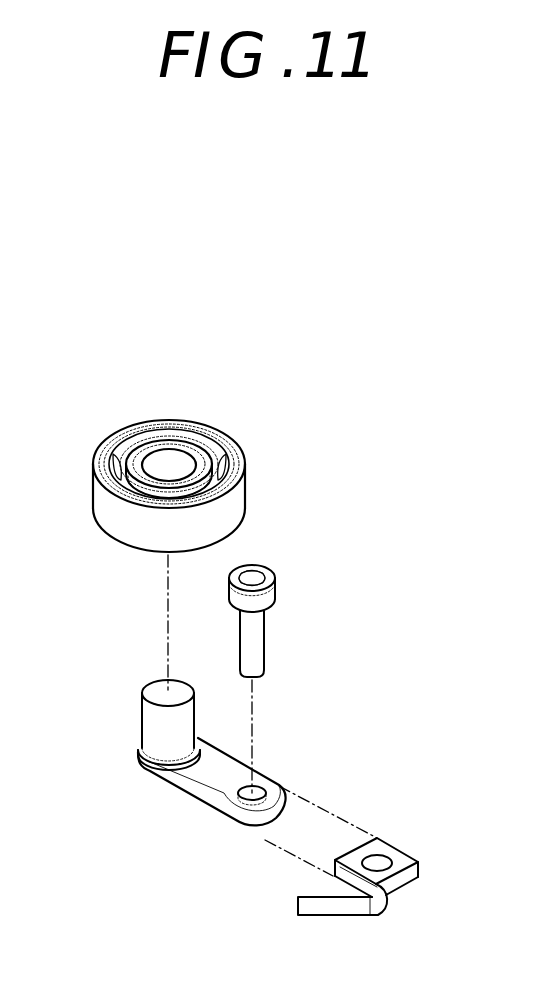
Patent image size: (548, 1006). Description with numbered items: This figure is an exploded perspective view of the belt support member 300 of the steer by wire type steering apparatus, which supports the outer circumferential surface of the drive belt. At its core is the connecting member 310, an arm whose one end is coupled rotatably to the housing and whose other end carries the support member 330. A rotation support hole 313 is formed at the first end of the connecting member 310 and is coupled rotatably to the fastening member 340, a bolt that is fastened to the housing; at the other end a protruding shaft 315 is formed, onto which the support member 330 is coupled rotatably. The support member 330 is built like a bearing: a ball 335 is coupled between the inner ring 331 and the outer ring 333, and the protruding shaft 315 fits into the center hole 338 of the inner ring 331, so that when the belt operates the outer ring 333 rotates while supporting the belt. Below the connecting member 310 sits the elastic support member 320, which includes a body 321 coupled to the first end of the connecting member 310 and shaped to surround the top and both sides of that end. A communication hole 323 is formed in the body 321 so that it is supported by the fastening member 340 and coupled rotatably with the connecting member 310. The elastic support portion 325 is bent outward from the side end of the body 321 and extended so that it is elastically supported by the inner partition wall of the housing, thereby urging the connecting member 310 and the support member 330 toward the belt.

The belt support member 300 is at (445, 362).
The connecting member 310 is at (203, 768).
The rotation support hole 313 is at (243, 787).
The protruding shaft 315 is at (155, 723).
The elastic support member 320 is at (398, 830).
The body 321 is at (403, 861).
The communication hole 323 is at (389, 866).
The elastic support portion 325 is at (342, 908).
The support member 330 is at (207, 405).
The inner ring 331 is at (148, 447).
The outer ring 333 is at (107, 502).
The ball 335 is at (122, 452).
The center hole 338 is at (168, 463).
The fastening member 340 is at (278, 631).